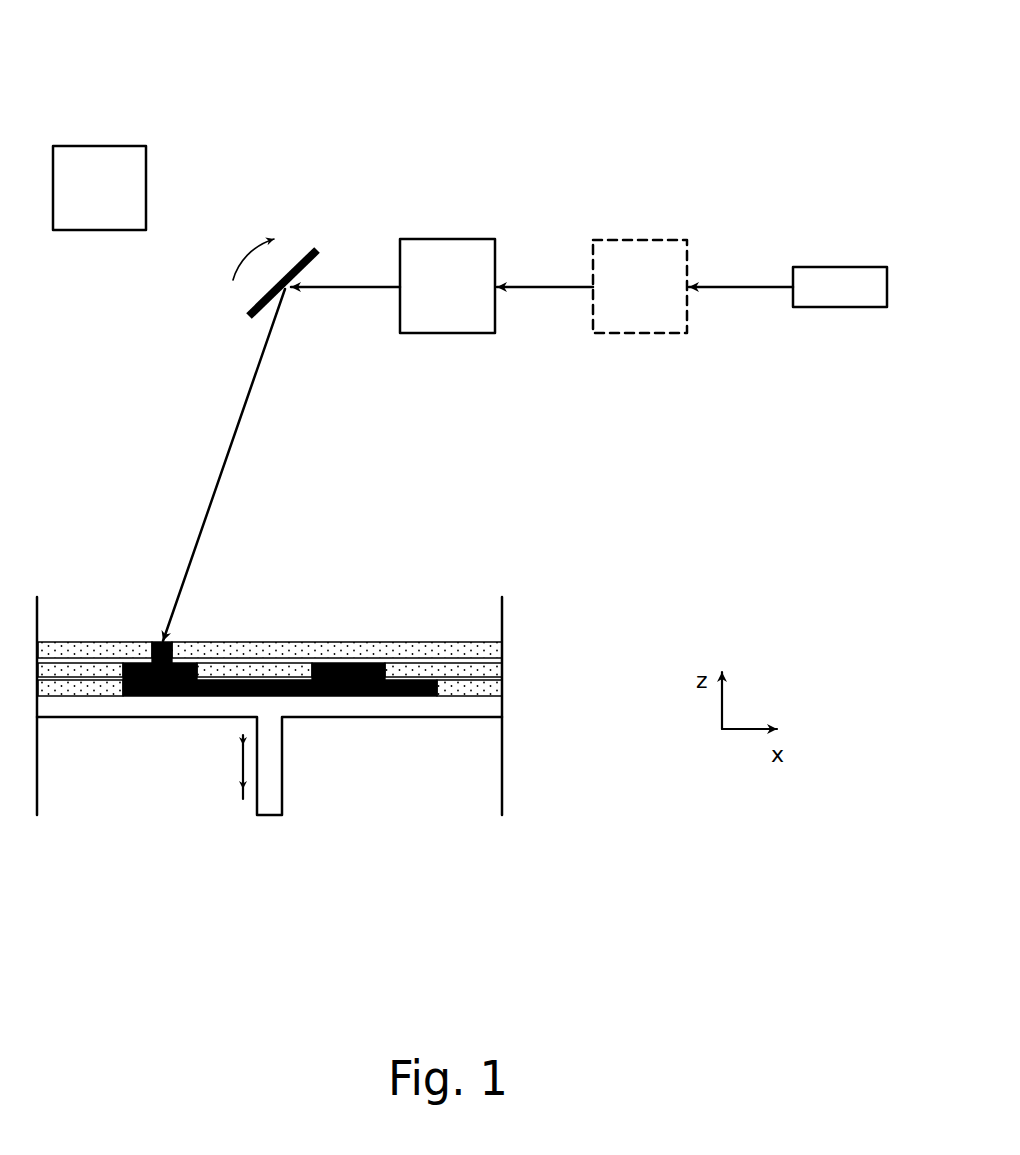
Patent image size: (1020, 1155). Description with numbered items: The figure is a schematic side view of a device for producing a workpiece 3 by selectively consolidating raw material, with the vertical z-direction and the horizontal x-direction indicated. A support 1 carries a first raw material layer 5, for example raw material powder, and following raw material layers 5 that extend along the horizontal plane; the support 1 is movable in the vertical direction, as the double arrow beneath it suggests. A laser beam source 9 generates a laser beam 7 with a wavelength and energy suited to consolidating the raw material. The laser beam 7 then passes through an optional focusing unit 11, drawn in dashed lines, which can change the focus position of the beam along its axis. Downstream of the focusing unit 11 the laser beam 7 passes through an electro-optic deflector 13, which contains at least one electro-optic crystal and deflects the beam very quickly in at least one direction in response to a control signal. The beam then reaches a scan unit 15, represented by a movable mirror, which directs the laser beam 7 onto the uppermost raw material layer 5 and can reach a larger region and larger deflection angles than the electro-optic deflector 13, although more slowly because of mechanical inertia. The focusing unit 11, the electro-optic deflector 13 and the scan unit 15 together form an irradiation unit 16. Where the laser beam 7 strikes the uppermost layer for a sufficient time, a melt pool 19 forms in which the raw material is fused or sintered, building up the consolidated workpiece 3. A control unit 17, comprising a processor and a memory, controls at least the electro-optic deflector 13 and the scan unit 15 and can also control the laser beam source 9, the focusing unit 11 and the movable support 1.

The support 1 is at (360, 719).
The workpiece 3 is at (130, 697).
The raw material layer 5 is at (494, 649).
The laser beam 7 is at (728, 287).
The laser beam source 9 is at (823, 301).
The focusing unit 11 is at (649, 284).
The electro-optic deflector 13 is at (464, 284).
The scan unit 15 is at (303, 245).
The irradiation unit 16 is at (556, 122).
The control unit 17 is at (104, 191).
The melt pool 19 is at (153, 641).